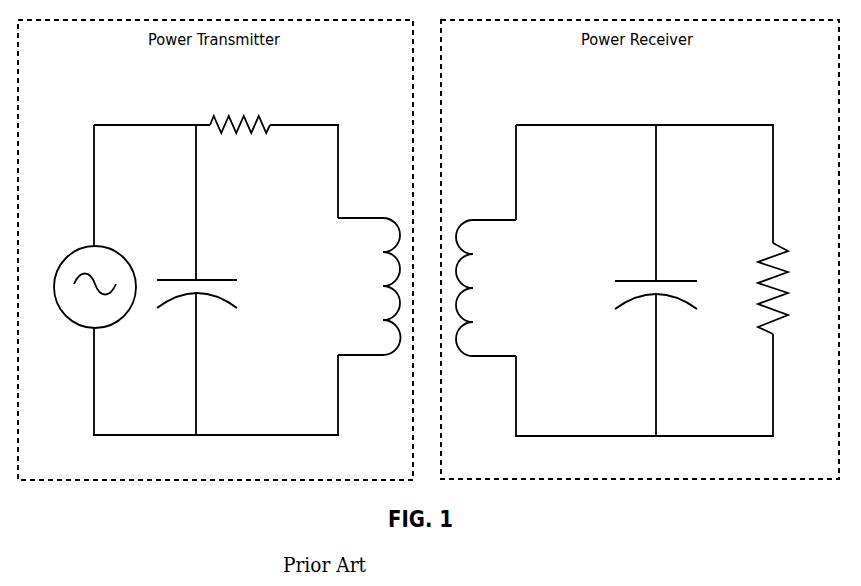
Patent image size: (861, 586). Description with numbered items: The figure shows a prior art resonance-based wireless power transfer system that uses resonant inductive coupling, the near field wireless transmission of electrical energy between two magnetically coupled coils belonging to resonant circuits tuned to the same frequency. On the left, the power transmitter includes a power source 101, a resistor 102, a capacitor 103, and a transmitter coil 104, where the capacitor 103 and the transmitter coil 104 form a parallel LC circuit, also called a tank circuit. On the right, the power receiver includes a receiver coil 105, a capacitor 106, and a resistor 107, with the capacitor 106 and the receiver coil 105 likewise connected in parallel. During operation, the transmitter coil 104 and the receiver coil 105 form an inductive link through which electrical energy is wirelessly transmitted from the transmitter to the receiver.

The power source 101 is at (95, 287).
The resistor 102 is at (240, 134).
The capacitor 103 is at (197, 278).
The transmitter coil 104 is at (369, 286).
The receiver coil 105 is at (486, 288).
The capacitor 106 is at (656, 282).
The resistor 107 is at (786, 288).